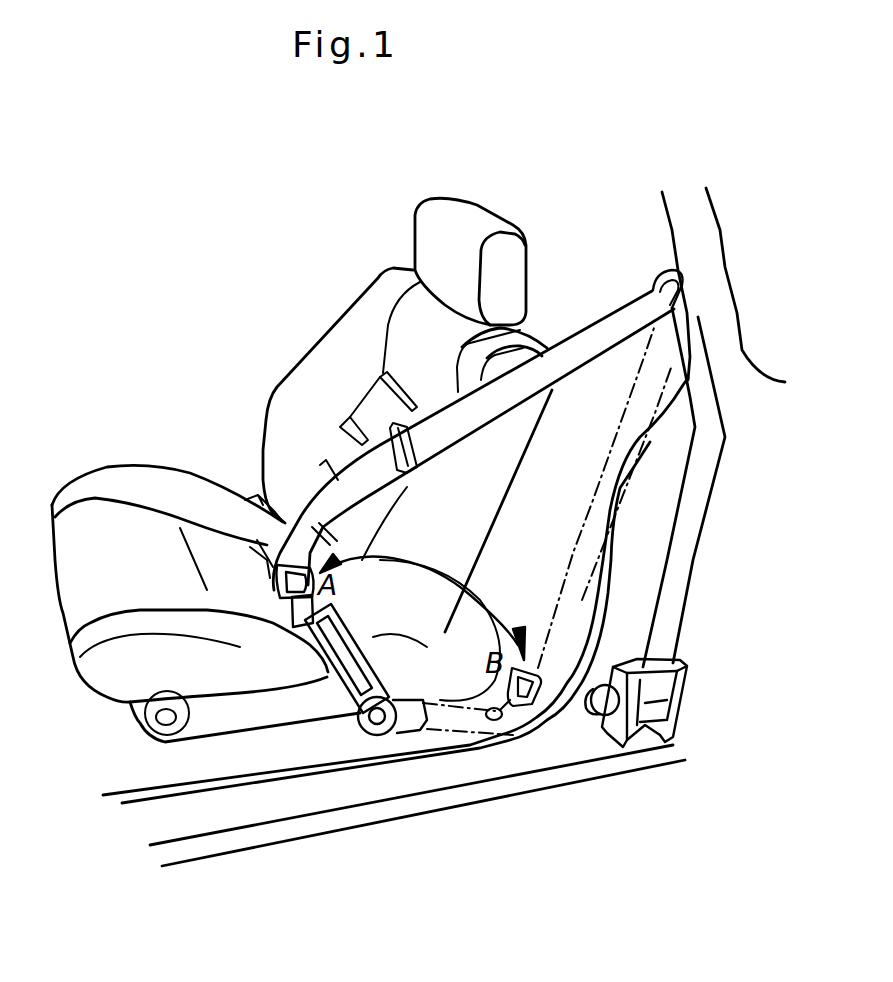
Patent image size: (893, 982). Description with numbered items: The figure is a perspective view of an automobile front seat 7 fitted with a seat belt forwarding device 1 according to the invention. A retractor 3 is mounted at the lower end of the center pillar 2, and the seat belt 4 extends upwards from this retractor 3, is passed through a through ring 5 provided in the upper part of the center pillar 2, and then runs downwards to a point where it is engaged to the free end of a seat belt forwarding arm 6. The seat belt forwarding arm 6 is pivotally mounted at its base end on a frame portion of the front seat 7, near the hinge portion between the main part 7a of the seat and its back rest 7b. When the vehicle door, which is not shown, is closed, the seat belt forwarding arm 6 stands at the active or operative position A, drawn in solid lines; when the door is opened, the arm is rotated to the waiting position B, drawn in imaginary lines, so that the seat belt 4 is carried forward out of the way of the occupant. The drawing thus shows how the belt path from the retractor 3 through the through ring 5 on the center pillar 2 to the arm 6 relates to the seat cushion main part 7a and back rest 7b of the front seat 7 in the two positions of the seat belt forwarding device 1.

The seat belt forwarding device 1 is at (373, 740).
The center pillar 2 is at (723, 267).
The retractor 3 is at (680, 700).
The seat belt 4 is at (577, 335).
The through ring 5 is at (655, 283).
The seat belt forwarding arm 6 is at (317, 660).
The front seat 7 is at (302, 470).
The main part 7a is at (206, 579).
The back rest 7b is at (267, 417).